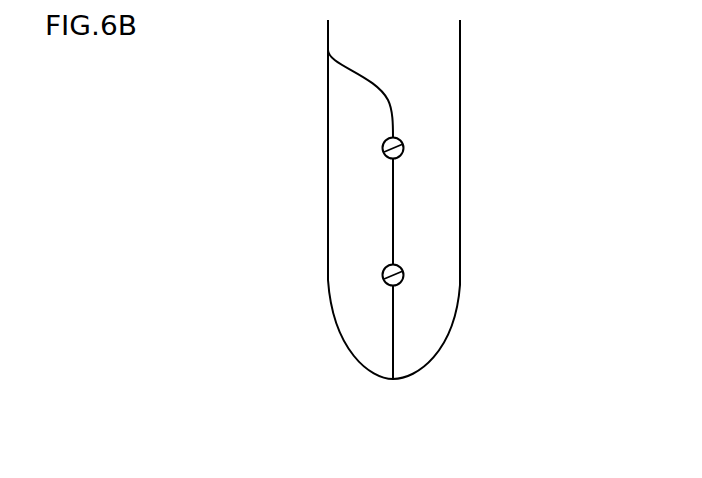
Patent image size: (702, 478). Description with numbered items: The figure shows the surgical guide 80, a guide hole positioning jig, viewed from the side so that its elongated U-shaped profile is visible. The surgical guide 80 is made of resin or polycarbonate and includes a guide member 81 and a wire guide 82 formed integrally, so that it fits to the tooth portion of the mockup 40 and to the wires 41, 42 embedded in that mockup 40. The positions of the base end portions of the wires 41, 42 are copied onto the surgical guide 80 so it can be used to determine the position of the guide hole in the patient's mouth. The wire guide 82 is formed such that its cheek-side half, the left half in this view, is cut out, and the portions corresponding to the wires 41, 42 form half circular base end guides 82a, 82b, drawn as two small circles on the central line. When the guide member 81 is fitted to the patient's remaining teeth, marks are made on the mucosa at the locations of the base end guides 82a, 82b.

The surgical guide 80 is at (461, 50).
The guide member 81 is at (428, 72).
The wire guide 82 is at (435, 212).
The mockup 40 is at (340, 211).
The wire 41 is at (382, 274).
The wire 42 is at (384, 144).
The base end guide 82a is at (386, 283).
The base end guide 82b is at (385, 156).